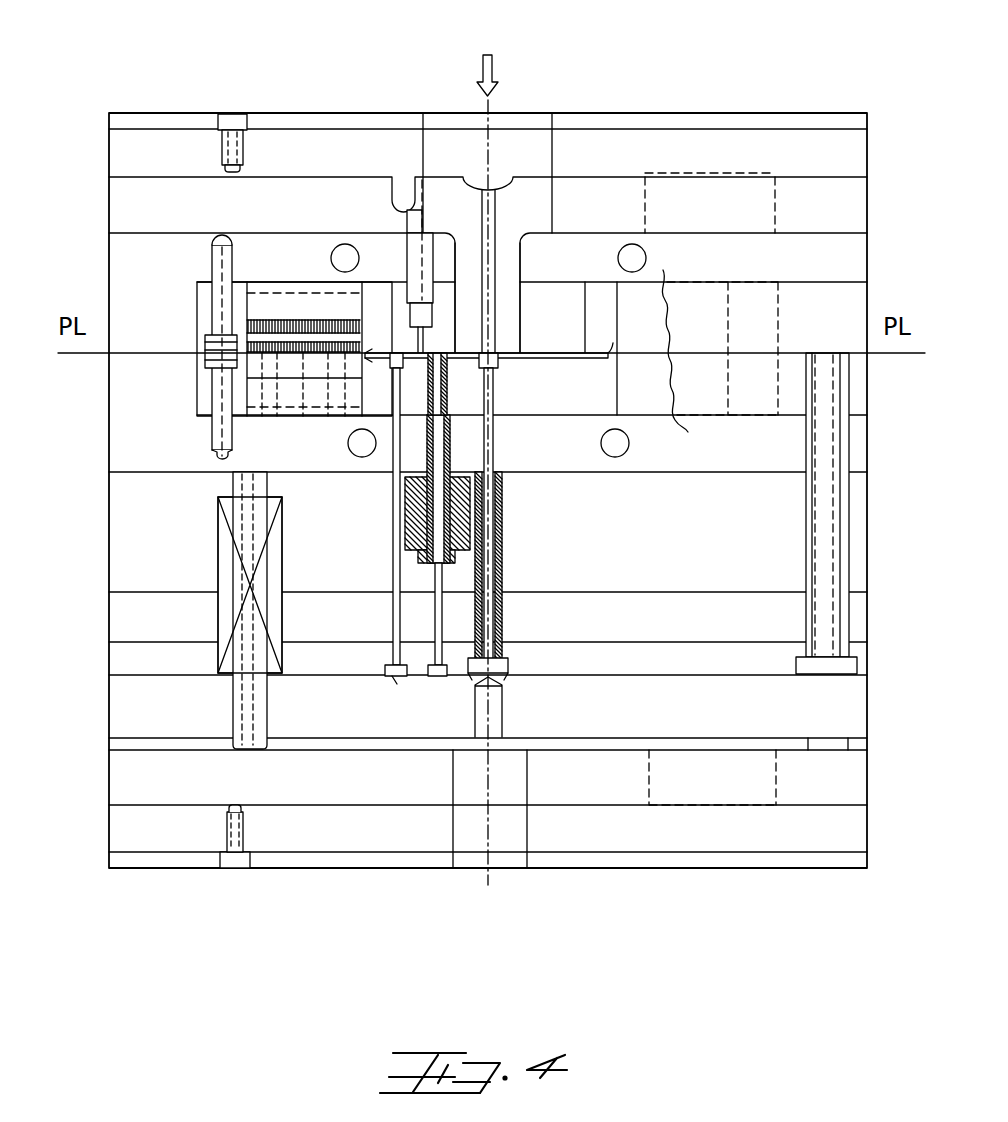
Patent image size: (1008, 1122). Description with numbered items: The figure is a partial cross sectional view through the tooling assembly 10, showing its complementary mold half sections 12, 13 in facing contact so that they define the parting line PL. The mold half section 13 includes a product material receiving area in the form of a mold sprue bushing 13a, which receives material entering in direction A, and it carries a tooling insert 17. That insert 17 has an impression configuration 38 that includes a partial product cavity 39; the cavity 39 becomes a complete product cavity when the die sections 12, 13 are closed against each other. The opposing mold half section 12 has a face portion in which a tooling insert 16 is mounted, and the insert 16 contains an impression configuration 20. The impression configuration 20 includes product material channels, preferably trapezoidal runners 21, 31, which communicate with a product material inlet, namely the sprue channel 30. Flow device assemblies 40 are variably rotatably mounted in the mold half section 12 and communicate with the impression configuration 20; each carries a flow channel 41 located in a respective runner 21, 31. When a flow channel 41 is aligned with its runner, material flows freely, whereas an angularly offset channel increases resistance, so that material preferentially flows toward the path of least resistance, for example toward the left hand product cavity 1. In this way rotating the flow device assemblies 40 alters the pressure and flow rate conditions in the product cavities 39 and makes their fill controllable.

The tooling assembly 10 is at (267, 92).
The mold half section 12 is at (110, 397).
The mold half section 13 is at (106, 285).
The mold sprue bushing 13a is at (472, 175).
The injection direction A is at (495, 71).
The sprue channel 30 is at (496, 207).
The runner 31 is at (532, 354).
The product cavity 1 is at (343, 320).
The tooling insert 16 is at (205, 388).
The tooling insert 17 is at (197, 300).
The impression configuration 20 is at (372, 363).
The runner 21 is at (412, 362).
The impression configuration 38 is at (262, 310).
The partial product cavity 39 is at (310, 323).
The flow device assembly 40 is at (458, 440).
The flow channel 41 is at (450, 350).